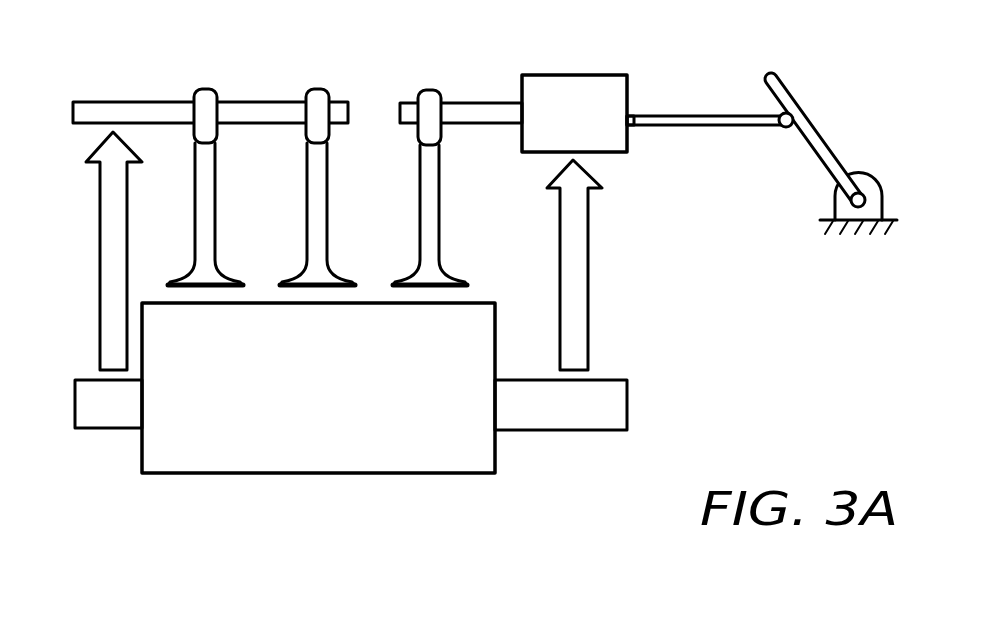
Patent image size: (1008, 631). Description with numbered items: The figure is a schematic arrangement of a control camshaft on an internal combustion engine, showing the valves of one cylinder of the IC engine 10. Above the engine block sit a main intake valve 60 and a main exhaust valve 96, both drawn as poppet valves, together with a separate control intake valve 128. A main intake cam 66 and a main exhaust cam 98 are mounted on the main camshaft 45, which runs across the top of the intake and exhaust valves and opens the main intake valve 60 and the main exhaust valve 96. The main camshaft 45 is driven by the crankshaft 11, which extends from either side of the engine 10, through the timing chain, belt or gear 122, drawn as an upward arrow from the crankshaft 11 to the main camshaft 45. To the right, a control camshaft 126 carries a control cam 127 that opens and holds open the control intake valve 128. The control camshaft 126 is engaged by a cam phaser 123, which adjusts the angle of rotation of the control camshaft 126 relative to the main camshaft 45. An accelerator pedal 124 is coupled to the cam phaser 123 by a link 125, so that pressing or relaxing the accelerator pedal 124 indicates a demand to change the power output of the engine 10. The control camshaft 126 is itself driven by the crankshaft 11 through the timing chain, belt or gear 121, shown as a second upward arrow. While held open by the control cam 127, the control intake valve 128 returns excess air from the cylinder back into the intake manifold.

The IC engine 10 is at (330, 401).
The crankshaft 11 is at (85, 402).
The main camshaft 45 is at (107, 107).
The main exhaust cam 98 is at (203, 92).
The main intake cam 66 is at (315, 92).
The control cam 127 is at (425, 92).
The control camshaft 126 is at (468, 113).
The cam phaser 123 is at (601, 77).
The connecting rod 125 is at (683, 118).
The accelerator pedal 124 is at (786, 92).
The main exhaust valve 96 is at (208, 228).
The main intake valve 60 is at (328, 228).
The control intake valve 128 is at (437, 228).
The timing chain, belt or gear 122 is at (108, 282).
The timing chain, belt or gear 121 is at (585, 283).